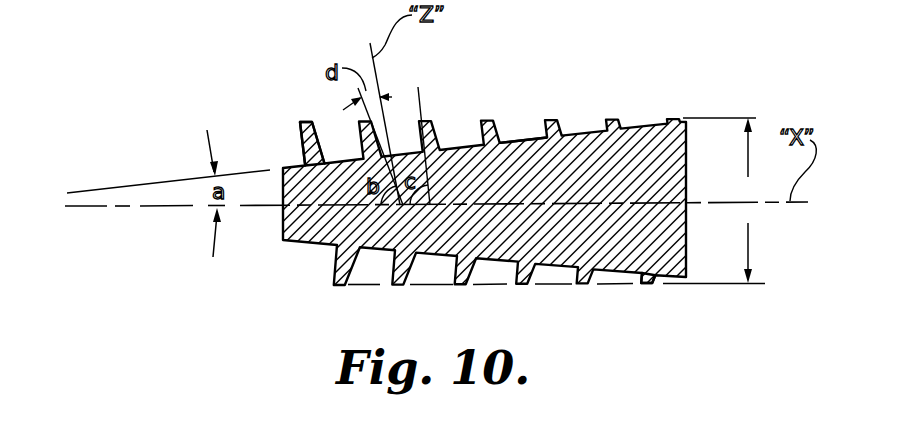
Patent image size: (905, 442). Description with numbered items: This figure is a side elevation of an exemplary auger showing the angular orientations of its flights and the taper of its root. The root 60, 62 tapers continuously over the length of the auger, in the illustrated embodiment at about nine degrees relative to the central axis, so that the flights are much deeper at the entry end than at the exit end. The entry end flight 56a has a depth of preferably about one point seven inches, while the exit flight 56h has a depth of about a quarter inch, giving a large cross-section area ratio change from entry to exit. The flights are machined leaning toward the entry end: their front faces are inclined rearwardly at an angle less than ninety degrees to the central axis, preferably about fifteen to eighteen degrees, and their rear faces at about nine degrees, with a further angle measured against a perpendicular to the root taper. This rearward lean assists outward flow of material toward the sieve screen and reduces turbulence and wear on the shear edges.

The entry end flight 56a is at (306, 122).
The exit flight 56h is at (645, 284).
The root 60 is at (513, 142).
The root 62 is at (530, 89).